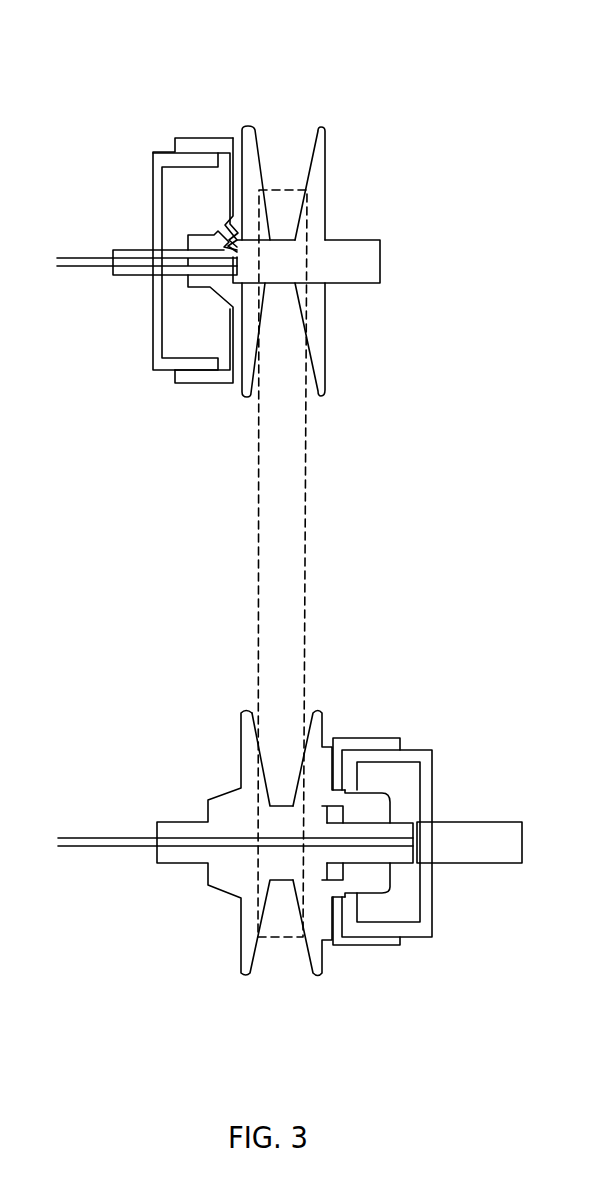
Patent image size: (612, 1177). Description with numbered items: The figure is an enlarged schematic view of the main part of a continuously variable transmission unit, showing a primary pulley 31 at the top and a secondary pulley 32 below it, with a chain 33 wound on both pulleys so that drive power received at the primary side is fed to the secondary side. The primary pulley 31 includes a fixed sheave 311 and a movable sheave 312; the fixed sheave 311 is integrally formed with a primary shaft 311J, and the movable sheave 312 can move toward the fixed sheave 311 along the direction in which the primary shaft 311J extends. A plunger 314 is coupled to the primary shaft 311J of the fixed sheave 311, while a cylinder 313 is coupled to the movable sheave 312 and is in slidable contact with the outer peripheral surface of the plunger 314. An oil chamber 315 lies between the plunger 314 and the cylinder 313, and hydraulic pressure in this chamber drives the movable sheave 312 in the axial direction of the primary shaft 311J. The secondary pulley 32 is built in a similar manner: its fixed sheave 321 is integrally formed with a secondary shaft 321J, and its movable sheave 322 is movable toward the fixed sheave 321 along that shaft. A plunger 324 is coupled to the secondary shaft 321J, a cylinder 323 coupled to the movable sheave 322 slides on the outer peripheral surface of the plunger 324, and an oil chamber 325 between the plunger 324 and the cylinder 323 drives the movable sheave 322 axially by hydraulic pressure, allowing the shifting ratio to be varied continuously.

The primary pulley 31 is at (407, 108).
The fixed sheave 311 is at (325, 397).
The primary shaft 311J is at (358, 270).
The movable sheave 312 is at (247, 163).
The cylinder 313 is at (195, 378).
The plunger 314 is at (153, 363).
The oil chamber 315 is at (178, 188).
The secondary pulley 32 is at (418, 673).
The fixed sheave 321 is at (247, 750).
The secondary shaft 321J is at (462, 837).
The movable sheave 322 is at (317, 735).
The cylinder 323 is at (347, 940).
The plunger 324 is at (415, 930).
The oil chamber 325 is at (412, 910).
The chain 33 is at (258, 598).